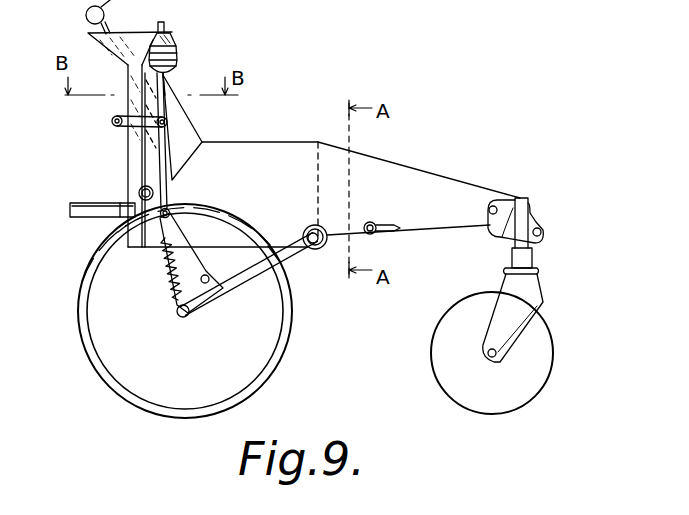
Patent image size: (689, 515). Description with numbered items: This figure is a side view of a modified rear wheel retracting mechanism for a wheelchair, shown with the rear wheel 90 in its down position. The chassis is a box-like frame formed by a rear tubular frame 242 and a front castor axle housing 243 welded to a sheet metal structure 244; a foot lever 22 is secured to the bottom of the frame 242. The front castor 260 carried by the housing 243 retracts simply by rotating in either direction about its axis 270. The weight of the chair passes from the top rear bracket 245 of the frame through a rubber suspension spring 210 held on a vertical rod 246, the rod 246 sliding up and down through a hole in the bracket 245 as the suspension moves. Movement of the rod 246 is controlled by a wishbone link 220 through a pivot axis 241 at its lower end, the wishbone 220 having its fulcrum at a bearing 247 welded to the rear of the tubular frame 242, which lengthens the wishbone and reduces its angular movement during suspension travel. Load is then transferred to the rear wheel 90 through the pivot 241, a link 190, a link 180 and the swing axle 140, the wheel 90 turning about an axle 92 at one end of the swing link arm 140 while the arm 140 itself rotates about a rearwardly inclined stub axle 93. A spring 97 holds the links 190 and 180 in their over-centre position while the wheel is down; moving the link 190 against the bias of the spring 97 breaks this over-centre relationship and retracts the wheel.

The foot lever 22 is at (80, 218).
The rear wheel 90 is at (269, 378).
The axle 92 is at (188, 317).
The stub axle 93 is at (316, 249).
The spring 97 is at (166, 284).
The swing axle 140 is at (293, 260).
The link 180 is at (182, 243).
The link 190 is at (176, 195).
The rubber suspension spring 210 is at (178, 58).
The wishbone link 220 is at (130, 126).
The pivot axis 241 is at (168, 123).
The rear tubular frame 242 is at (128, 175).
The front castor axle housing 243 is at (540, 226).
The sheet metal structure 244 is at (447, 178).
The top rear bracket 245 is at (171, 40).
The vertical rod 246 is at (166, 94).
The bearing 247 is at (112, 121).
The front castor 260 is at (517, 325).
The axis 270 is at (526, 200).